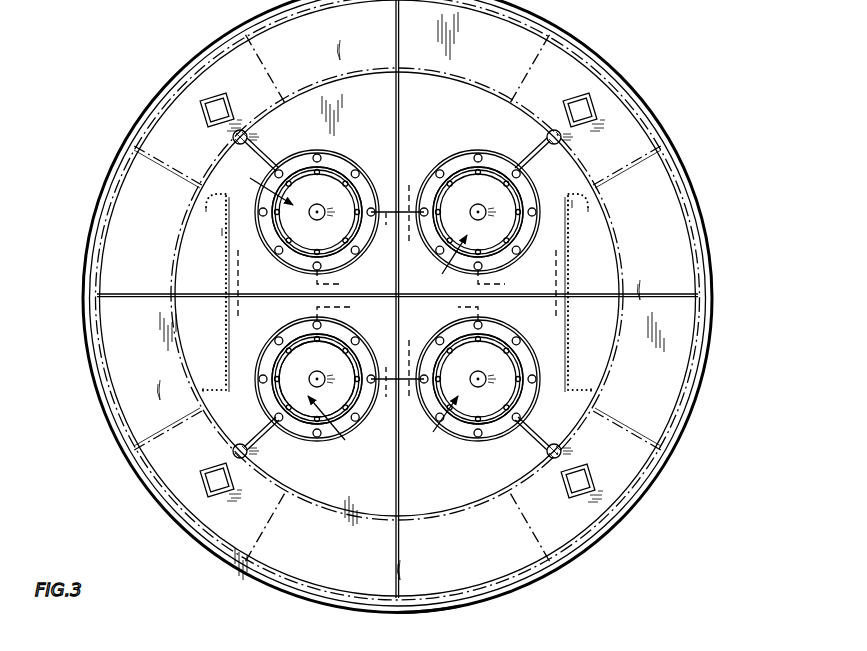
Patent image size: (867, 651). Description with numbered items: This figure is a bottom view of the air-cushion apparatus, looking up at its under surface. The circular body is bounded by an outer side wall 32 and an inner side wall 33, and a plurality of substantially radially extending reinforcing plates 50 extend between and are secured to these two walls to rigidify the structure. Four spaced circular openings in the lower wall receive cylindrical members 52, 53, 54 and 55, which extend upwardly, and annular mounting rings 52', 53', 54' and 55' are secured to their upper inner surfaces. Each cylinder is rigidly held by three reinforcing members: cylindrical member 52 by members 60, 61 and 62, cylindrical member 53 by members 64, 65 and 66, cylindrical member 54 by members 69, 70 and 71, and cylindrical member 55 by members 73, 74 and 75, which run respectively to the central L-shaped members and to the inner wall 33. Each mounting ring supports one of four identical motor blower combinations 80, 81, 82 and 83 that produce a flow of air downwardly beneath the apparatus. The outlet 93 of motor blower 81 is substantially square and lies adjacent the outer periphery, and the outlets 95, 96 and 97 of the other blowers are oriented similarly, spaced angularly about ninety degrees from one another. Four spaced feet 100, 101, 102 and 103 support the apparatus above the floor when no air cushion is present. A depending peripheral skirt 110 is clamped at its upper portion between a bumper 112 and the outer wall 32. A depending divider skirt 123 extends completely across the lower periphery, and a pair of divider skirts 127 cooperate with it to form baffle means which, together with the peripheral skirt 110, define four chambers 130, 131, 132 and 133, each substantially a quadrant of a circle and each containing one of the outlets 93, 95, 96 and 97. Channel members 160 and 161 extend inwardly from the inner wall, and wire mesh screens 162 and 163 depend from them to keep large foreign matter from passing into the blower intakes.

The outer side wall 32 is at (537, 570).
The inner side wall 33 is at (428, 512).
The reinforcing plates 50 is at (275, 70).
The cylindrical member 52 is at (492, 379).
The annular mounting ring 52' is at (495, 366).
The cylindrical member 53 is at (478, 194).
The annular mounting ring 53' is at (503, 212).
The cylindrical member 54 is at (321, 214).
The annular mounting ring 54' is at (328, 195).
The cylindrical member 55 is at (320, 379).
The annular mounting ring 55' is at (302, 366).
The reinforcing member 60 is at (412, 365).
The reinforcing member 61 is at (455, 307).
The reinforcing member 62 is at (529, 429).
The reinforcing member 64 is at (409, 188).
The reinforcing member 65 is at (504, 278).
The reinforcing member 66 is at (512, 162).
The reinforcing member 69 is at (402, 232).
The reinforcing member 70 is at (342, 282).
The reinforcing member 71 is at (262, 159).
The reinforcing member 73 is at (355, 410).
The reinforcing member 74 is at (347, 308).
The reinforcing member 75 is at (255, 437).
The motor blower combination 80 is at (437, 423).
The motor blower combination 81 is at (445, 264).
The motor blower combination 82 is at (258, 184).
The motor blower combination 83 is at (333, 429).
The outlet 93 is at (592, 123).
The outlet 95 is at (592, 473).
The outlet 96 is at (223, 96).
The outlet 97 is at (226, 490).
The foot 100 is at (562, 452).
The foot 101 is at (553, 130).
The foot 102 is at (234, 139).
The foot 103 is at (240, 444).
The skirt 110 is at (683, 420).
The bumper 112 is at (705, 385).
The divider skirt 123 is at (400, 123).
The divider skirts 127 is at (237, 292).
The chamber 130 is at (417, 573).
The chamber 131 is at (653, 274).
The chamber 132 is at (351, 38).
The chamber 133 is at (146, 378).
The channel member 160 is at (592, 197).
The channel member 161 is at (205, 199).
The wire mesh screen 162 is at (571, 220).
The wire mesh screen 163 is at (223, 232).